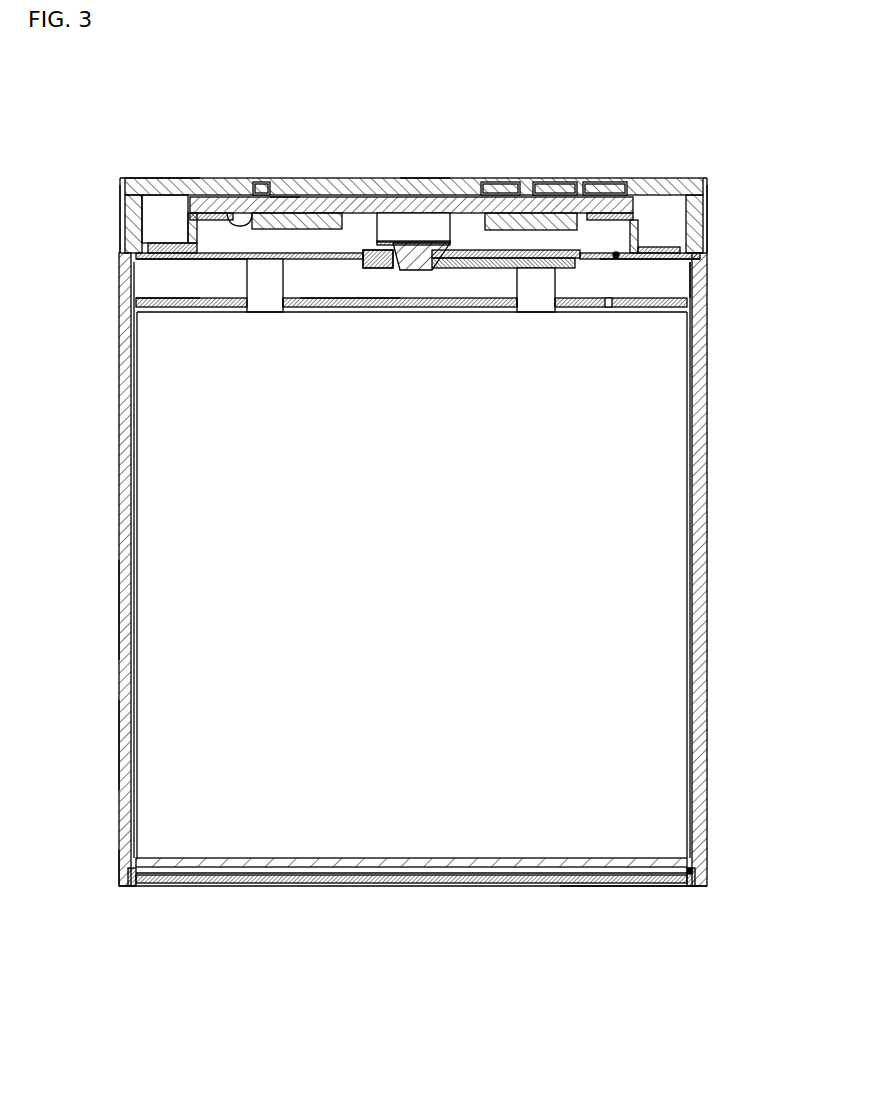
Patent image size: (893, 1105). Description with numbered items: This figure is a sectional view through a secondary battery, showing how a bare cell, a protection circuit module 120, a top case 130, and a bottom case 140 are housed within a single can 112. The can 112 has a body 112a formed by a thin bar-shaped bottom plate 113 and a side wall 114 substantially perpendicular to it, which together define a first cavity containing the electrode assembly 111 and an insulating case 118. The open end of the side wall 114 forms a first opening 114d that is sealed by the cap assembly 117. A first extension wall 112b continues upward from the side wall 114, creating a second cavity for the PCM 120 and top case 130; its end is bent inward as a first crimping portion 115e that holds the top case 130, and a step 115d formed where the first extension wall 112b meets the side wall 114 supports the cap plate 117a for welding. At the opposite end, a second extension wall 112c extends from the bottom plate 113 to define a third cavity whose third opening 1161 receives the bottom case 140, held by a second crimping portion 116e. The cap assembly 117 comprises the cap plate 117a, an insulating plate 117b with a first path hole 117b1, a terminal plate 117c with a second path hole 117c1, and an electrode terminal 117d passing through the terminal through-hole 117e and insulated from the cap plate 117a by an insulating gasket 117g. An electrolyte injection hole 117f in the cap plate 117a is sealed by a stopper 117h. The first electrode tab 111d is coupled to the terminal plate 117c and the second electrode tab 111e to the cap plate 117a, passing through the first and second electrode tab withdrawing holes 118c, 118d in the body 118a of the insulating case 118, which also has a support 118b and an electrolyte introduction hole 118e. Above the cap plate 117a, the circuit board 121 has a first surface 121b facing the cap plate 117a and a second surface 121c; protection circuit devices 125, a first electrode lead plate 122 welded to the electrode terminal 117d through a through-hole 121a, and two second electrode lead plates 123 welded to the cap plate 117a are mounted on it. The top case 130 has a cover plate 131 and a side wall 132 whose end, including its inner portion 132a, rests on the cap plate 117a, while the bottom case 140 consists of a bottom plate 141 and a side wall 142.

The electrode assembly 111 is at (660, 605).
The first electrode tab 111d is at (548, 310).
The second electrode tab 111e is at (255, 305).
The can 112 is at (125, 392).
The body 112a is at (125, 608).
The first extension wall 112b is at (119, 193).
The second extension wall 112c is at (125, 872).
The bottom plate 113 is at (245, 862).
The side wall 114 is at (134, 745).
The first opening 114d is at (682, 291).
The step 115d is at (134, 260).
The first crimping portion 115e is at (124, 177).
The second crimping portion 116e is at (131, 886).
The third opening 1161 is at (632, 893).
The cap assembly 117 is at (680, 275).
The cap plate 117a is at (200, 262).
The insulating plate 117b is at (482, 269).
The first path hole 117b1 is at (393, 268).
The terminal plate 117c is at (440, 269).
The second path hole 117c1 is at (425, 271).
The electrode terminal 117d is at (415, 246).
The terminal through-hole 117e is at (397, 246).
The electrolyte injection hole 117f is at (616, 258).
The insulating gasket 117g is at (368, 248).
The stopper 117h is at (616, 210).
The insulating case 118 is at (650, 307).
The body 118a is at (345, 308).
The support 118b is at (137, 305).
The first electrode tab withdrawing hole 118c is at (520, 308).
The second electrode tab withdrawing hole 118d is at (285, 308).
The electrolyte introduction hole 118e is at (608, 308).
The protection circuit module 120 is at (172, 205).
The circuit board 121 is at (203, 196).
The through-hole 121a is at (441, 207).
The first surface 121b is at (240, 212).
The second surface 121c is at (281, 200).
The first electrode lead plate 122 is at (472, 212).
The second electrode lead plate 123 is at (150, 248).
The protection circuit devices 125 is at (266, 194).
The top case 130 is at (421, 194).
The cover plate 131 is at (166, 180).
The side wall 132 is at (698, 203).
The cap side inner portion 132a is at (702, 265).
The bottom case 140 is at (352, 884).
The bottom plate 141 is at (435, 880).
The side wall 142 is at (693, 870).